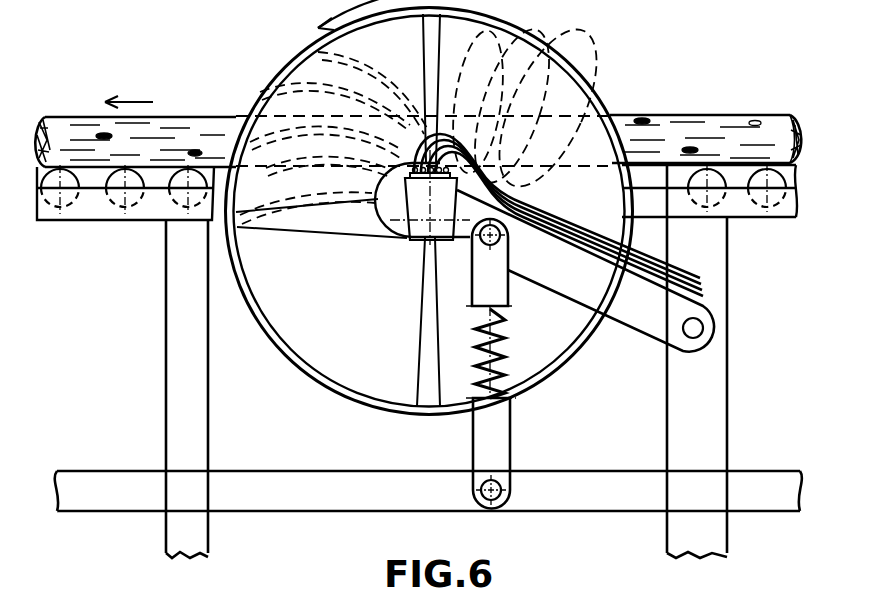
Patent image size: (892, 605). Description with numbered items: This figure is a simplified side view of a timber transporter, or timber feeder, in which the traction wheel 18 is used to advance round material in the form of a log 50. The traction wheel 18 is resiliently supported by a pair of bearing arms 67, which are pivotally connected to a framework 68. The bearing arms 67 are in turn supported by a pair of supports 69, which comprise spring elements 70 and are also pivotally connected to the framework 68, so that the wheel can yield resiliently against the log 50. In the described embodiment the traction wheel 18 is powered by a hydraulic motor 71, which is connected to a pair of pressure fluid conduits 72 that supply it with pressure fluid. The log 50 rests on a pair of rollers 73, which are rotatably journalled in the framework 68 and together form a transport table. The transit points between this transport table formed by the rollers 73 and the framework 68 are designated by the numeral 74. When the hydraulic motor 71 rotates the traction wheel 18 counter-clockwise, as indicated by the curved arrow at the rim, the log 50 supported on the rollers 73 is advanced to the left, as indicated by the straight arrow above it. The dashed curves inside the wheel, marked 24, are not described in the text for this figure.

The traction wheel 18 is at (300, 376).
The spray paths 24 is at (556, 36).
The log 50 is at (708, 128).
The bearing arms 67 is at (592, 288).
The framework 68 is at (78, 212).
The supports 69 is at (482, 287).
The spring elements 70 is at (512, 372).
The hydraulic motor 71 is at (408, 238).
The pressure fluid conduits 72 is at (705, 290).
The rollers 73 is at (186, 182).
The transit points 74 is at (214, 178).